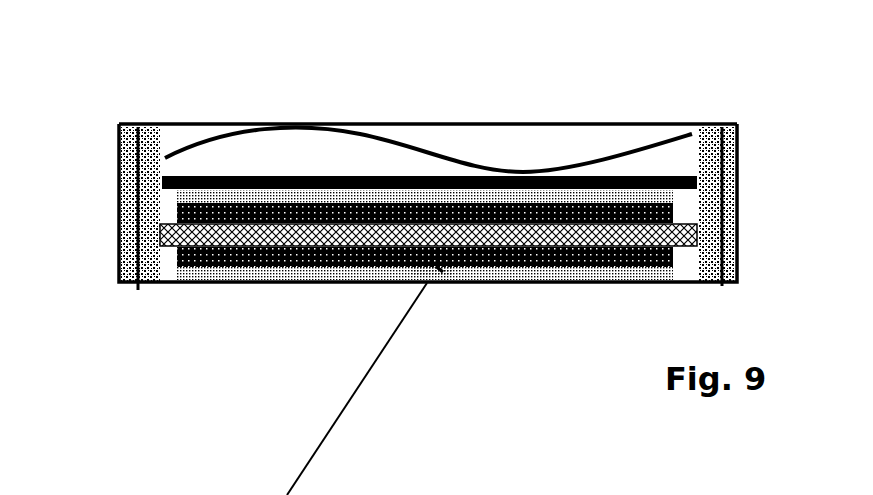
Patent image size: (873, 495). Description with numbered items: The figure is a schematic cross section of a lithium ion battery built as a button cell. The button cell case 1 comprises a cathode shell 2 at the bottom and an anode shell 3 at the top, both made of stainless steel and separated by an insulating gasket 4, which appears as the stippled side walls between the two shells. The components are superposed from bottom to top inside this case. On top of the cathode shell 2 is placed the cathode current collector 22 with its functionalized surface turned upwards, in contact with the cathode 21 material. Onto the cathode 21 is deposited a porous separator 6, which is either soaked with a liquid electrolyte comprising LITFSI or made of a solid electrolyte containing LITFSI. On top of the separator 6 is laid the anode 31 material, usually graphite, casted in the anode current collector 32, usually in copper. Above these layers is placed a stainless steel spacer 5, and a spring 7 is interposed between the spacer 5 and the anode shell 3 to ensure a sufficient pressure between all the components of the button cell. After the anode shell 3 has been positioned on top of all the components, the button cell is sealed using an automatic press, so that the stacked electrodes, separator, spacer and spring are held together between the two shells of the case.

The button cell case 1 is at (560, 78).
The cathode shell 2 is at (348, 282).
The anode shell 3 is at (443, 123).
The insulating gasket 4 is at (120, 262).
The stainless steel spacer 5 is at (657, 172).
The porous separator 6 is at (165, 227).
The spring 7 is at (660, 147).
The cathode 21 is at (140, 243).
The cathode current collector 22 is at (177, 246).
The anode 31 is at (673, 213).
The anode current collector 32 is at (673, 197).